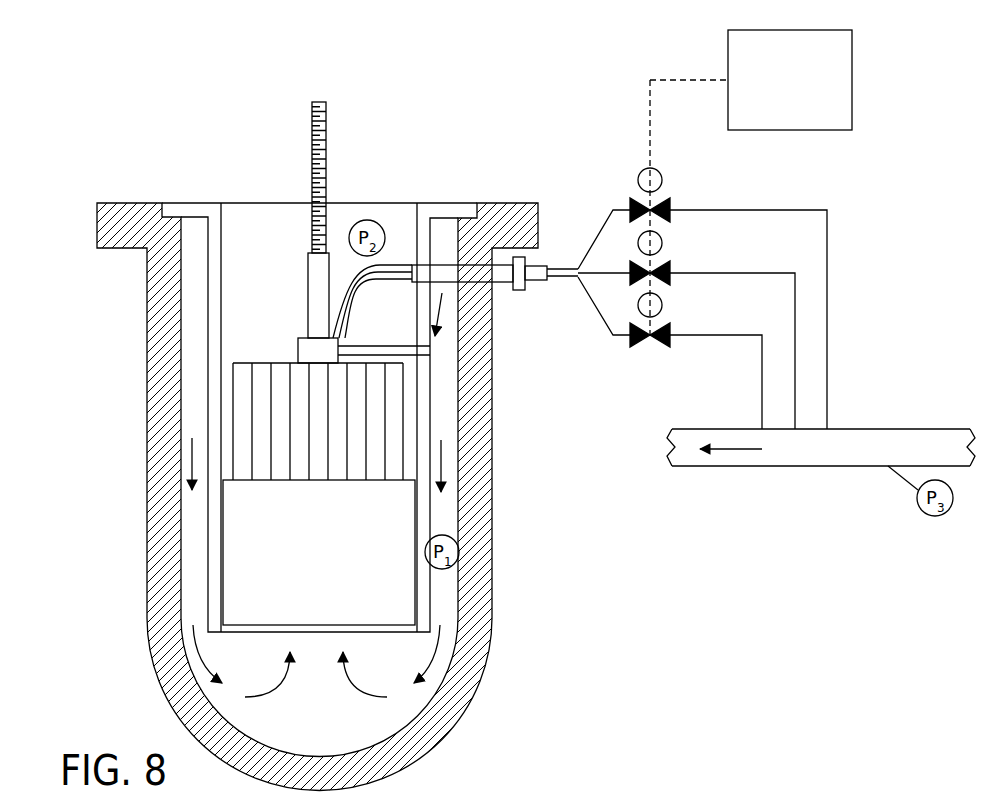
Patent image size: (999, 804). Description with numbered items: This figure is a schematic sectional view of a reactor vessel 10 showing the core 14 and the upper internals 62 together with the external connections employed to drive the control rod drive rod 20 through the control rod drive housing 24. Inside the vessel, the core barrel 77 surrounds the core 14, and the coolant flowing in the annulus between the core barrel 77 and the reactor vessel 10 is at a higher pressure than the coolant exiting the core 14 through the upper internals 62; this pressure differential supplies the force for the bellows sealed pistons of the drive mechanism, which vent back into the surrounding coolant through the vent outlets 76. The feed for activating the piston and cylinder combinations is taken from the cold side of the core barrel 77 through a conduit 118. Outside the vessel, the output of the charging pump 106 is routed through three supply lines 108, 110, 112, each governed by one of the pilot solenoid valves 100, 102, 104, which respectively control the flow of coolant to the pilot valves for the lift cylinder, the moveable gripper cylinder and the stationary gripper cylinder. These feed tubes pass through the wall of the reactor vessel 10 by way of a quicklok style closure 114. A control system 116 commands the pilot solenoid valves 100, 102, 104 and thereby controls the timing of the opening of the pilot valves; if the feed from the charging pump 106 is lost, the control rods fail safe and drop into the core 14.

The reactor vessel 10 is at (492, 550).
The core 14 is at (332, 562).
The control rod drive shaft 20 is at (325, 158).
The control rod drive housing 24 is at (310, 303).
The upper internals 62 is at (238, 420).
The vent outlets 76 is at (428, 594).
The core barrel 77 is at (430, 513).
The pilot solenoid valve 100 is at (668, 203).
The pilot solenoid valve 102 is at (630, 265).
The pilot solenoid valve 104 is at (670, 347).
The charging pump 106 is at (860, 429).
The first supply line 108 is at (740, 209).
The second supply line 110 is at (707, 272).
The third supply line 112 is at (688, 335).
The quicklok style closure 114 is at (508, 283).
The control system 116 is at (853, 97).
The conduit 118 is at (432, 356).